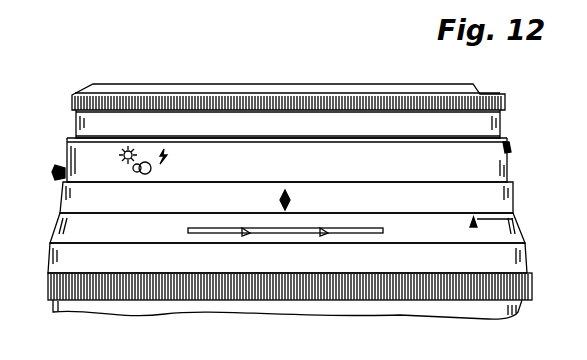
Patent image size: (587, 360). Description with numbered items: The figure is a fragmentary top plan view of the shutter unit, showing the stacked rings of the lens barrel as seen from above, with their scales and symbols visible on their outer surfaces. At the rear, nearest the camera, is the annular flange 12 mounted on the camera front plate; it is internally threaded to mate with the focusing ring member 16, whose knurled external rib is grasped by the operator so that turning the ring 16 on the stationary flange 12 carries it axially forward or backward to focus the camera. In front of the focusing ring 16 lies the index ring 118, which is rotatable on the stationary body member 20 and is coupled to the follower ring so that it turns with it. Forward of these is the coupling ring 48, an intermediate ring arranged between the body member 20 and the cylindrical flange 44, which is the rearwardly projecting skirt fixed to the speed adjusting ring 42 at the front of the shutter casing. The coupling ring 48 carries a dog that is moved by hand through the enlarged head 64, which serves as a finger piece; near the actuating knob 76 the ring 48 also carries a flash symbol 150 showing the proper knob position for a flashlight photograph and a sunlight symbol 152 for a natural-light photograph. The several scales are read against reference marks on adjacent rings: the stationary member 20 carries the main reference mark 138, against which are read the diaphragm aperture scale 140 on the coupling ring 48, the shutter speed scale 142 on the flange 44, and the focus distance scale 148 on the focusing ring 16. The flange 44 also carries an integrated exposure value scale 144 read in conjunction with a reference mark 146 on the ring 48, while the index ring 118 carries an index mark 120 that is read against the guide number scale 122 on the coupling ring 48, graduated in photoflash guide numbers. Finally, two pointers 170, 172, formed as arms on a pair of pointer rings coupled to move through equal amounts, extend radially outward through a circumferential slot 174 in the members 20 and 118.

The annular flange 12 is at (55, 306).
The focusing ring member 16 is at (50, 250).
The body member 20 is at (63, 193).
The speed adjusting ring 42 is at (84, 93).
The cylindrical flange 44 is at (76, 116).
The coupling ring 48 is at (68, 143).
The enlarged head 64 is at (54, 172).
The actuating knob 76 is at (147, 175).
The index ring 118 is at (58, 218).
The index mark 120 is at (514, 219).
The guide number scale 122 is at (510, 177).
The main reference mark 138 is at (292, 200).
The diaphragm aperture scale 140 is at (352, 158).
The shutter speed scale 142 is at (413, 126).
The integrated exposure value scale 144 is at (503, 125).
The reference mark 146 is at (508, 149).
The focus distance scale 148 is at (334, 257).
The flash symbol 150 is at (164, 160).
The sunlight symbol 152 is at (122, 165).
The pointer 170 is at (246, 228).
The pointer 172 is at (327, 228).
The circumferential slot 174 is at (378, 226).